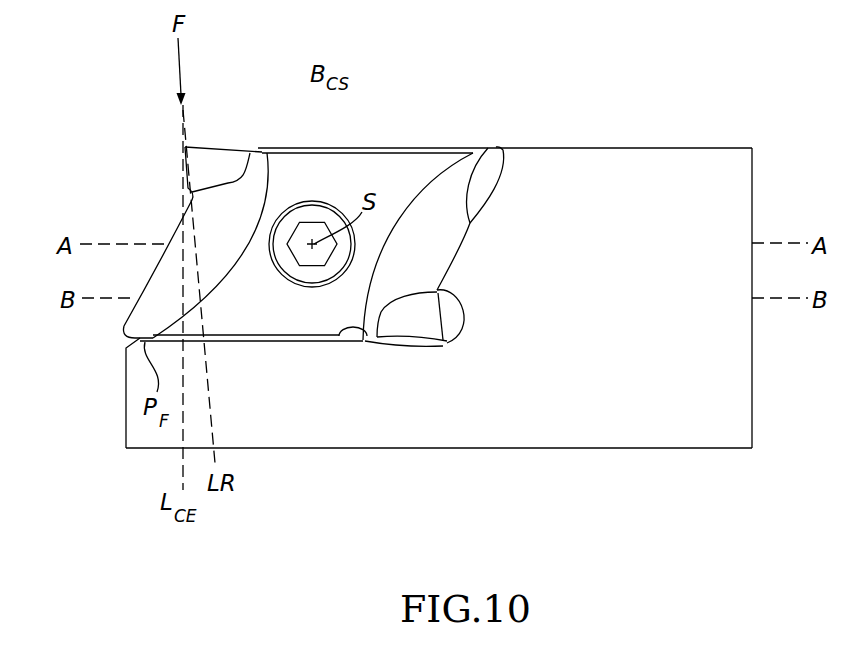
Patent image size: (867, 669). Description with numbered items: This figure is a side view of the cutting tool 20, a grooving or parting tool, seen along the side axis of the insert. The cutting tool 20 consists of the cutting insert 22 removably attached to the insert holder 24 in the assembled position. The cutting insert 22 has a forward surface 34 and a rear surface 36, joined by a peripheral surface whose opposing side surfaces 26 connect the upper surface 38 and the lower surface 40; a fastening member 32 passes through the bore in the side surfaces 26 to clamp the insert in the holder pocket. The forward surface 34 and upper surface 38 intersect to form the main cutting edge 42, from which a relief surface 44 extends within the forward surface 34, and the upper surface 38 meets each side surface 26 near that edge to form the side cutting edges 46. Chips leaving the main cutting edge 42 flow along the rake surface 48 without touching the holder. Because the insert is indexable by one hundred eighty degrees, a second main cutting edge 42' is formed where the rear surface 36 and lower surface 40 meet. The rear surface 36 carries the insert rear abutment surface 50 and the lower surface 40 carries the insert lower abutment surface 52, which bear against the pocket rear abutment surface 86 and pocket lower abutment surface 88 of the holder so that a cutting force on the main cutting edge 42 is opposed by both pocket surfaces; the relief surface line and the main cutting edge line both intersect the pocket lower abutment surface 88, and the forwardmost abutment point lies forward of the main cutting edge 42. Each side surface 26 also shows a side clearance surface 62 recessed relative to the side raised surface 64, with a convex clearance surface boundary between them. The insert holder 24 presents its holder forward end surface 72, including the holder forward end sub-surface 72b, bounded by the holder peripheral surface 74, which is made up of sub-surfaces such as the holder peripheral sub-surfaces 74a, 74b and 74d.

The cutting tool 20 is at (737, 122).
The cutting insert 22 is at (466, 130).
The insert holder 24 is at (645, 133).
The side surfaces 26 is at (356, 170).
The fastening member 32 is at (293, 270).
The forward surface 34 is at (123, 318).
The rear surface 36 is at (497, 183).
The upper surface 38 is at (427, 147).
The lower surface 40 is at (320, 342).
The main cutting edge 42 is at (156, 145).
The second main cutting edge 42' is at (439, 351).
The relief surface 44 is at (185, 172).
The side cutting edges 46 is at (200, 148).
The rake surface 48 is at (228, 142).
The insert rear abutment surface 50 is at (485, 205).
The insert lower abutment surface 52 is at (290, 342).
The side clearance surface 62 is at (138, 330).
The side raised surface 64 is at (310, 173).
The holder forward end surface 72 is at (117, 402).
The holder forward end sub-surface 72b is at (127, 365).
The holder peripheral surface 74 is at (724, 378).
The holder peripheral sub-surface 74a is at (727, 205).
The holder peripheral sub-surface 74b is at (668, 450).
The holder peripheral sub-surface 74d is at (692, 148).
The pocket rear abutment surface 86 is at (488, 148).
The pocket lower abutment surface 88 is at (373, 343).